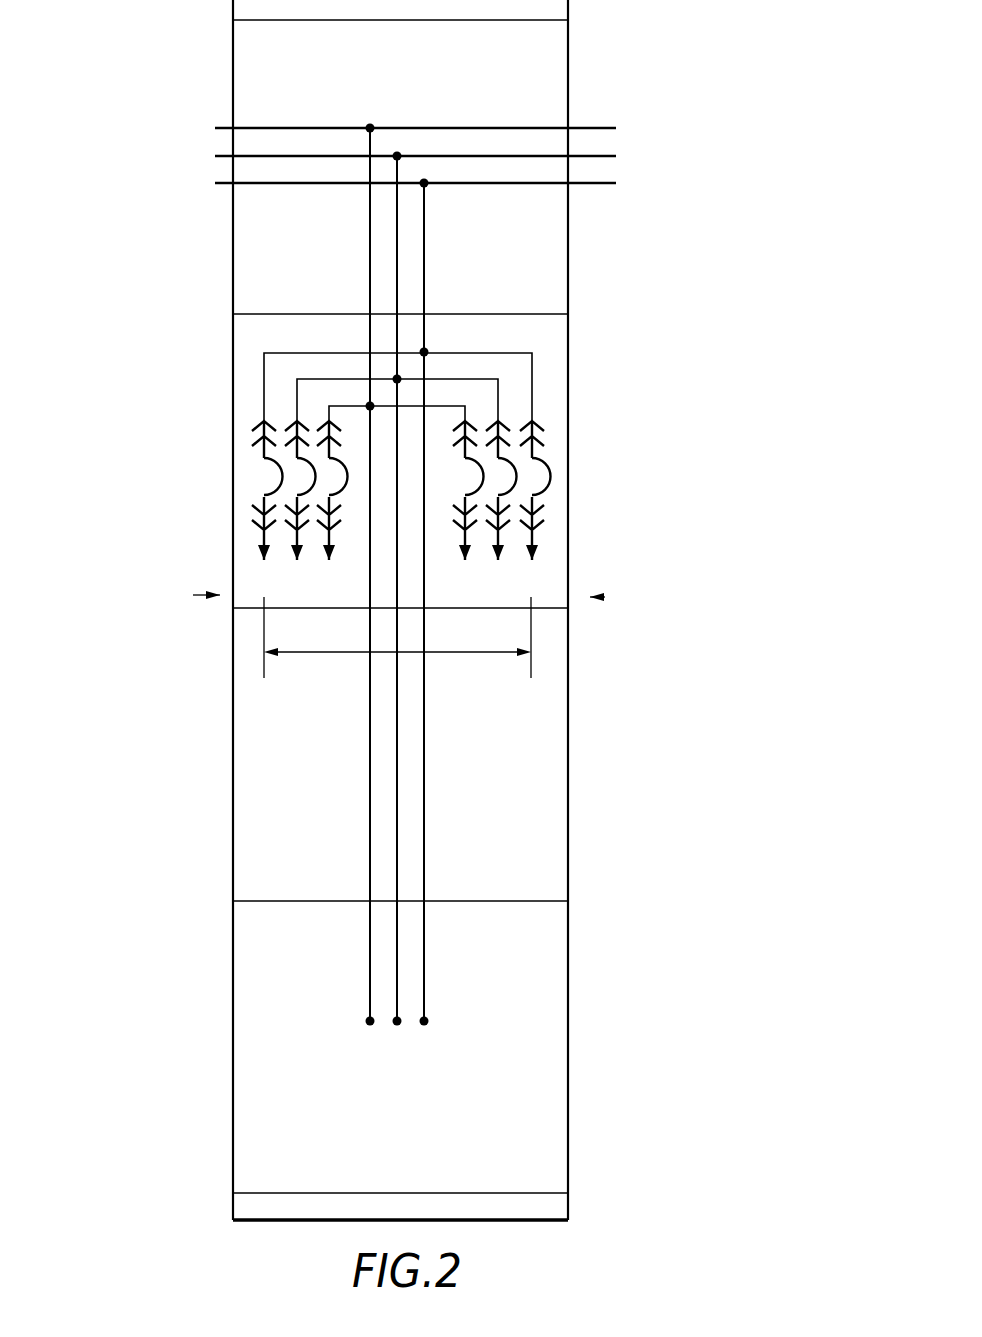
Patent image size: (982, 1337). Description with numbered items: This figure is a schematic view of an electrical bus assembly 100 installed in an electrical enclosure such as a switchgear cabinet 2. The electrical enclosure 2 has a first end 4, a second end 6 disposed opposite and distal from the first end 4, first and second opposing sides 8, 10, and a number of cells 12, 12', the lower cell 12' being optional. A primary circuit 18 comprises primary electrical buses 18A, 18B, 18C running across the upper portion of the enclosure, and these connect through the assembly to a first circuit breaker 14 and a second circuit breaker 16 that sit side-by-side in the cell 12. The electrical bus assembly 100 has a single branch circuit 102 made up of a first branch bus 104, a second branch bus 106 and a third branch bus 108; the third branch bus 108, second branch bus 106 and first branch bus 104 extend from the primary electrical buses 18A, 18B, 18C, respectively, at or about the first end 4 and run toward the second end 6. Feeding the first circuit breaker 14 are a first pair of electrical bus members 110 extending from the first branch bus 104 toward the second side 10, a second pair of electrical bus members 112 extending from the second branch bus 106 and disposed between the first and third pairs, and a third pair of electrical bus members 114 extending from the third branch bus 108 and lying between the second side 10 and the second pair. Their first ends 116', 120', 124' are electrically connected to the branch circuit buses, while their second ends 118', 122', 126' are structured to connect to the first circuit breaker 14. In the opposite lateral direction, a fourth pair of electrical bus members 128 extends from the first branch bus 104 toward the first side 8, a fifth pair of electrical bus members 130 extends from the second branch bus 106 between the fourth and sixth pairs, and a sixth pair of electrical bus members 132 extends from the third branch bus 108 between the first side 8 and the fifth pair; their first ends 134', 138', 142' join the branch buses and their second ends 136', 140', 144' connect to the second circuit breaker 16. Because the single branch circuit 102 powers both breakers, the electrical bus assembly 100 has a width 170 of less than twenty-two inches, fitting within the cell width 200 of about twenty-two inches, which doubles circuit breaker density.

The switchgear cabinet 2 is at (612, 1212).
The first end 4 is at (581, 7).
The second end 6 is at (226, 1208).
The first side 8 is at (570, 667).
The second side 10 is at (232, 675).
The cell 12 is at (375, 550).
The cell 12' is at (374, 827).
The first circuit breaker 14 is at (253, 467).
The second circuit breaker 16 is at (560, 436).
The primary circuit 18 is at (431, 128).
The primary electrical bus 18A is at (595, 128).
The primary electrical bus 18B is at (607, 154).
The primary electrical bus 18C is at (610, 184).
The electrical bus assembly 100 is at (189, 325).
The single branch circuit 102 is at (367, 575).
The first branch bus 104 is at (425, 233).
The second branch bus 106 is at (398, 211).
The third branch bus 108 is at (369, 199).
The first pair of electrical bus members 110 is at (297, 353).
The second pair of electrical bus members 112 is at (308, 379).
The third pair of electrical bus members 114 is at (345, 406).
The first end 116' is at (375, 286).
The second end 118' is at (217, 477).
The first end 120' is at (361, 323).
The second end 122' is at (242, 450).
The first end 124' is at (338, 362).
The second end 126' is at (344, 496).
The fourth pair of electrical bus members 128 is at (496, 353).
The fifth pair of electrical bus members 130 is at (495, 379).
The sixth pair of electrical bus members 132 is at (443, 407).
The first end 134' is at (451, 299).
The second end 136' is at (583, 462).
The first end 138' is at (433, 424).
The second end 140' is at (561, 441).
The first end 142' is at (418, 483).
The second end 144' is at (537, 419).
The width 170 is at (462, 654).
The width 200 is at (592, 596).